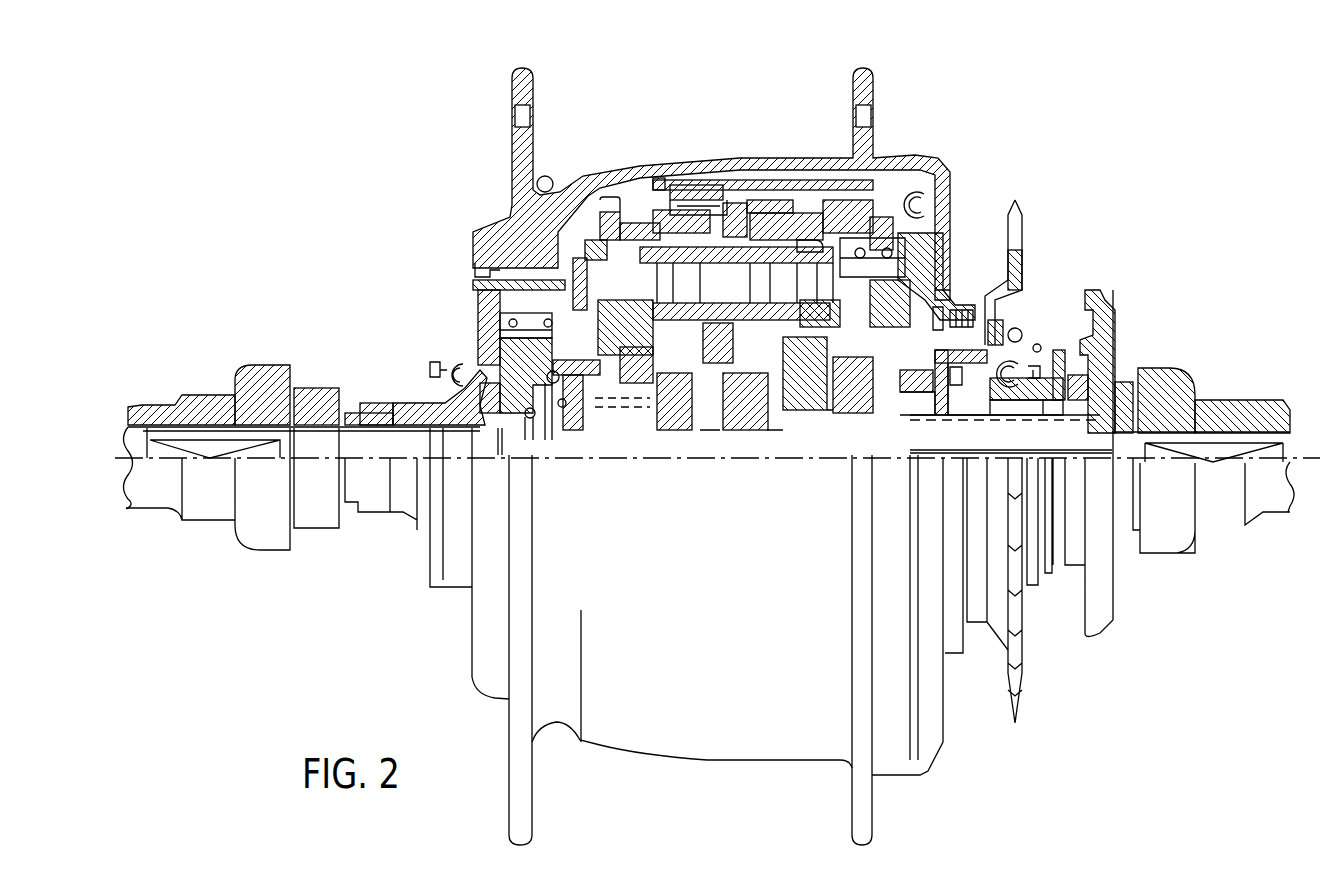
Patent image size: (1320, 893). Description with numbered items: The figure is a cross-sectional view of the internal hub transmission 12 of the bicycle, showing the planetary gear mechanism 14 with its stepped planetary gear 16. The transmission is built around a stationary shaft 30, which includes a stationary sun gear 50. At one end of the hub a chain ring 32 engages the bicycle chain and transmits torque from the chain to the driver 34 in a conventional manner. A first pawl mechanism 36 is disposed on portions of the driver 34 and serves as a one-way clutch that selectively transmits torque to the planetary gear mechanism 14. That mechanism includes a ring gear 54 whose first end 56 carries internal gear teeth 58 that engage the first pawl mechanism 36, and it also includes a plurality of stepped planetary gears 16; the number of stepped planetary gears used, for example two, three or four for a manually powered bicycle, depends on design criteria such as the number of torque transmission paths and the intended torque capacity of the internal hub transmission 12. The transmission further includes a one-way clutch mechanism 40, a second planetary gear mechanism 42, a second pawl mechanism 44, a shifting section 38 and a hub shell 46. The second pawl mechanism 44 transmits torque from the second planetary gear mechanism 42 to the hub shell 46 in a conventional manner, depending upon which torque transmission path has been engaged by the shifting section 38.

The internal hub transmission 12 is at (641, 72).
The planetary gear mechanism 14 is at (798, 226).
The stepped planetary gear 16 is at (763, 205).
The stationary shaft 30 is at (703, 441).
The chain ring 32 is at (1018, 265).
The driver 34 is at (918, 260).
The first pawl mechanism 36 is at (905, 233).
The shifting section 38 is at (888, 442).
The one-way clutch mechanism 40 is at (740, 180).
The second planetary gear mechanism 42 is at (654, 208).
The second pawl mechanism 44 is at (528, 320).
The hub shell 46 is at (714, 175).
The stationary sun gear 50 is at (810, 373).
The ring gear 54 is at (821, 215).
The first end 56 is at (940, 160).
The internal gear teeth 58 is at (880, 215).